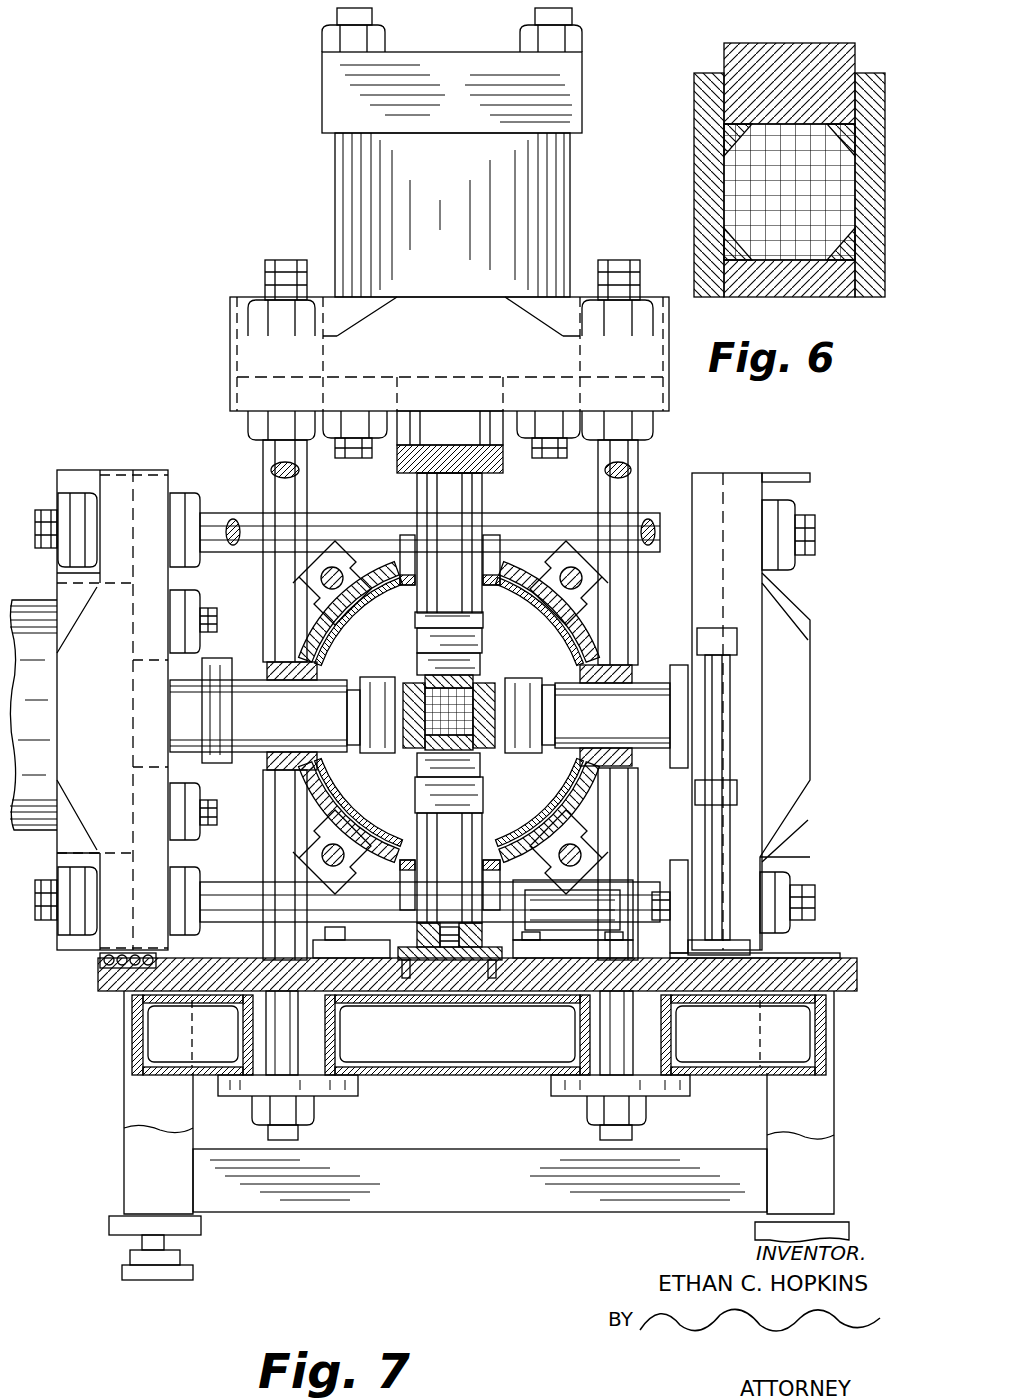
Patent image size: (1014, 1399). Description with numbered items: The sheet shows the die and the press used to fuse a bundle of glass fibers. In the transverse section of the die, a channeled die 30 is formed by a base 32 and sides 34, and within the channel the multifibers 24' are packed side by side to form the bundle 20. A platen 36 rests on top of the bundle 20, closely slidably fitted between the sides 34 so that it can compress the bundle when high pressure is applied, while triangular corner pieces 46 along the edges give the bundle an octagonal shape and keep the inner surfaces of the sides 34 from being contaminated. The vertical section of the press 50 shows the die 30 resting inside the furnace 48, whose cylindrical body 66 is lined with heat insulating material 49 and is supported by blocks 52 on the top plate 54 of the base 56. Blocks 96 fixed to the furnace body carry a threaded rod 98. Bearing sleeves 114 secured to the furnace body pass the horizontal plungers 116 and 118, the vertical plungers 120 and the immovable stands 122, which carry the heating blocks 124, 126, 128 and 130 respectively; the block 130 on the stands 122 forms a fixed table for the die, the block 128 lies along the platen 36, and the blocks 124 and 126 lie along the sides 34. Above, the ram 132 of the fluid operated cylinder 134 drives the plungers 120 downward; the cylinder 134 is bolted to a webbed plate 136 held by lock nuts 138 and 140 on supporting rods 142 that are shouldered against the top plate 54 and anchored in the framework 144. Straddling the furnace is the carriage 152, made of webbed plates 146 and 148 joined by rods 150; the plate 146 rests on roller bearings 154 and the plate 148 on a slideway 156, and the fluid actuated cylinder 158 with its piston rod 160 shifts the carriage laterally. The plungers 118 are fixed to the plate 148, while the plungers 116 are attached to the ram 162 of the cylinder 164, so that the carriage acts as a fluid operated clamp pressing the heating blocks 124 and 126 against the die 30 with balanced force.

In FIG. 6, the bundle 20 is at (866, 205).
In FIG. 7, the bundle 20 is at (480, 750).
In FIG. 6, the multifibers 24' is at (698, 196).
In FIG. 6, the channeled die 30 is at (718, 48).
In FIG. 7, the channeled die 30 is at (446, 713).
In FIG. 6, the base 32 is at (831, 290).
In FIG. 6, the sides 34 is at (700, 83).
In FIG. 6, the platen 36 is at (773, 50).
In FIG. 7, the platen 36 is at (425, 682).
In FIG. 6, the triangular corner pieces 46 is at (728, 145).
In FIG. 7, the furnace 48 is at (410, 512).
In FIG. 7, the heat insulating material 49 is at (372, 832).
In FIG. 7, the press 50 is at (408, 354).
In FIG. 7, the blocks 52 is at (385, 942).
In FIG. 7, the top plate 54 is at (100, 978).
In FIG. 7, the base 56 is at (125, 1008).
In FIG. 7, the cylindrical body 66 is at (537, 640).
In FIG. 7, the blocks 96 is at (318, 578).
In FIG. 7, the rod 98 is at (336, 566).
In FIG. 7, the bearing sleeves 114 is at (412, 590).
In FIG. 7, the horizontal plungers 116 is at (302, 714).
In FIG. 7, the horizontal plungers 118 is at (616, 715).
In FIG. 7, the vertical plungers 120 is at (468, 552).
In FIG. 7, the stands 122 is at (469, 870).
In FIG. 7, the heating block 124 is at (395, 757).
In FIG. 7, the heating block 126 is at (520, 680).
In FIG. 7, the heating block 128 is at (417, 632).
In FIG. 7, the heating block 130 is at (483, 809).
In FIG. 7, the ram 132 is at (438, 425).
In FIG. 7, the fluid operated cylinder 134 is at (368, 162).
In FIG. 7, the webbed plate 136 is at (248, 355).
In FIG. 7, the lock nuts 138 is at (258, 290).
In FIG. 7, the lock nuts 140 is at (250, 424).
In FIG. 7, the supporting rods 142 is at (268, 492).
In FIG. 7, the framework 144 is at (337, 1043).
In FIG. 7, the webbed plate 146 is at (140, 468).
In FIG. 7, the webbed plate 148 is at (720, 492).
In FIG. 7, the rods 150 is at (232, 552).
In FIG. 7, the carriage 152 is at (126, 680).
In FIG. 7, the roller bearings 154 is at (142, 953).
In FIG. 7, the slideway 156 is at (832, 955).
In FIG. 7, the fluid actuated cylinder 158 is at (553, 920).
In FIG. 7, the piston rod 160 is at (655, 892).
In FIG. 7, the ram 162 is at (218, 763).
In FIG. 7, the fluid operated cylinder 164 is at (32, 645).